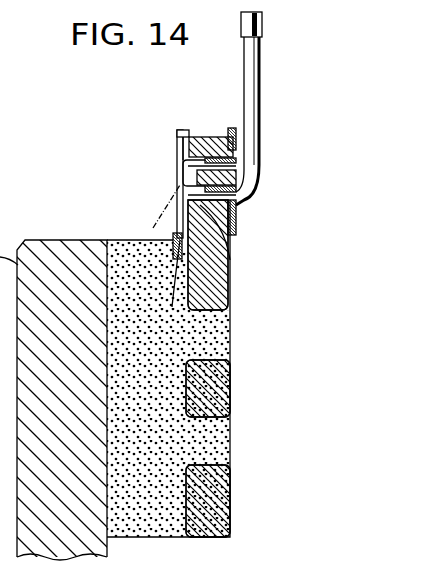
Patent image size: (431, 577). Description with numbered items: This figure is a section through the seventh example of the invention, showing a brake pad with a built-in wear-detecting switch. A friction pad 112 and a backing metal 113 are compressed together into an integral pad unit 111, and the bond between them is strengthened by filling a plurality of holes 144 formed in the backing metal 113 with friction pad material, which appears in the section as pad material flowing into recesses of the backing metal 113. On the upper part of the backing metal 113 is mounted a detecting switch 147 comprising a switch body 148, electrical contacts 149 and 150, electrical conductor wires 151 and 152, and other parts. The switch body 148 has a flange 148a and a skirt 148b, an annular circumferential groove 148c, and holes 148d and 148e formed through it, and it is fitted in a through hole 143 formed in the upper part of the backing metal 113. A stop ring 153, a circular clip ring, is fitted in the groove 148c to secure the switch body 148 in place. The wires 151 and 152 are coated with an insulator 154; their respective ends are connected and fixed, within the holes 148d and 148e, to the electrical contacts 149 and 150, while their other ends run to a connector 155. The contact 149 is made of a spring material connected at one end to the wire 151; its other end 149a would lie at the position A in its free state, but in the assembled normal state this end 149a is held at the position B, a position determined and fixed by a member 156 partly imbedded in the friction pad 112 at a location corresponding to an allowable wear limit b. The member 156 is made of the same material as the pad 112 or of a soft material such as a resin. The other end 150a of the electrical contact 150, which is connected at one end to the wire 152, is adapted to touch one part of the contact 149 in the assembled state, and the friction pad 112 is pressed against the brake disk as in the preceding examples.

The integral pad unit 111 is at (234, 350).
The friction pad 112 is at (115, 243).
The backing metal 113 is at (218, 300).
The through hole 143 is at (212, 240).
The holes 144 is at (205, 357).
The detecting switch 147 is at (172, 147).
The switch body 148 is at (198, 152).
The flange 148a is at (183, 140).
The skirt 148b is at (219, 150).
The annular circumferential groove 148c is at (232, 232).
The hole 148d is at (183, 165).
The hole 148e is at (236, 205).
The electrical contact 149 is at (178, 132).
The other end of contact 149a is at (160, 226).
The electrical contact 150 is at (212, 235).
The other end of contact 150a is at (190, 172).
The electrical conductor wire 151 is at (256, 68).
The electrical conductor wire 152 is at (244, 196).
The stop ring 153 is at (233, 128).
The insulator 154 is at (243, 178).
The connector 155 is at (262, 30).
The member 156 is at (175, 245).
The position A is at (170, 201).
The position B is at (171, 291).
The allowable wear limit b is at (174, 287).